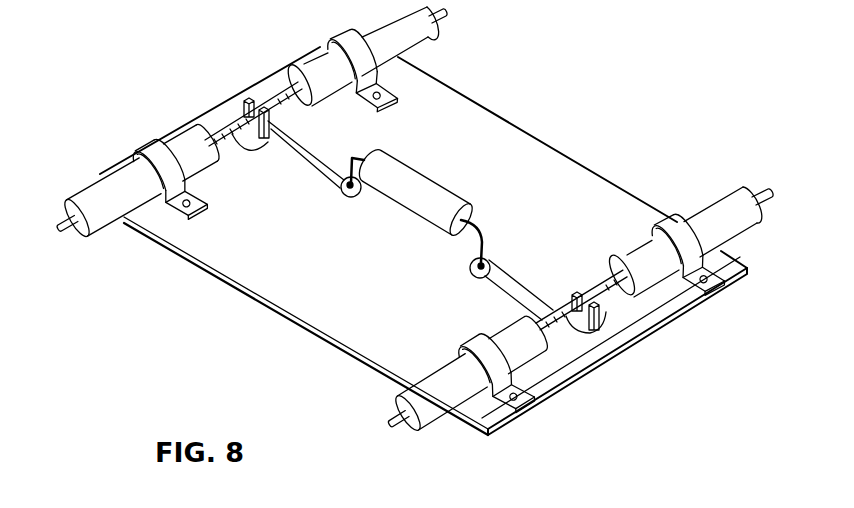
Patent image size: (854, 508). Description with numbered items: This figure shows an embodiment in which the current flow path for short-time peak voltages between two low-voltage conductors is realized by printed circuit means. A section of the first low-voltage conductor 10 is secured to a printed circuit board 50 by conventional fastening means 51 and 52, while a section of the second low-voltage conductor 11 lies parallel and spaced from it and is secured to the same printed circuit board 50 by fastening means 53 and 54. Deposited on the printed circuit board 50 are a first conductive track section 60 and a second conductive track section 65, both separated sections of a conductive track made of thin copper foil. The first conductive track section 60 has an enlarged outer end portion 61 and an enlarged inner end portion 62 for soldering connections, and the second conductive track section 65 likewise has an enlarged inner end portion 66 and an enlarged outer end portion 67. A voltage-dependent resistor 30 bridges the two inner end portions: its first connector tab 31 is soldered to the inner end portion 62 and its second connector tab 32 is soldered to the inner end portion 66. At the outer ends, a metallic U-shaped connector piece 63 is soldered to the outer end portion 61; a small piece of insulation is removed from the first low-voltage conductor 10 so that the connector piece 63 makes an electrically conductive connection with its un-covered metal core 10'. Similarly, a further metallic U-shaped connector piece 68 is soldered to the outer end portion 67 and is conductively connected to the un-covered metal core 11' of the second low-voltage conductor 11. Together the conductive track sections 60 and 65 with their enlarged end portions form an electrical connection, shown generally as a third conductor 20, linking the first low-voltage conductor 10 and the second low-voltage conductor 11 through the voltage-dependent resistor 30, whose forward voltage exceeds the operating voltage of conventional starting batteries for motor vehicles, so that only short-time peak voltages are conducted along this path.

The first low-voltage conductor 10 is at (135, 170).
The un-covered metal core of the first low-voltage conductor 10' is at (326, 76).
The second low-voltage conductor 11 is at (465, 393).
The un-covered metal core of the second low-voltage conductor 11' is at (654, 258).
The third conductor 20 is at (423, 241).
The voltage-dependent resistor 30 is at (423, 180).
The first connector tab 31 is at (348, 162).
The second connector tab 32 is at (477, 227).
The printed circuit board 50 is at (252, 292).
The fastening means 51 is at (167, 213).
The fastening means 52 is at (402, 53).
The fastening means 53 is at (537, 387).
The fastening means 54 is at (713, 282).
The first conductive track section 60 is at (298, 157).
The outer end portion of the first conductive track section 61 is at (280, 123).
The inner end portion of the first conductive track section 62 is at (347, 193).
The U-shaped connector piece 63 is at (245, 107).
The second conductive track section 65 is at (517, 282).
The inner end portion of the second conductive track section 66 is at (470, 265).
The outer end portion of the second conductive track section 67 is at (600, 303).
The U-shaped connector piece 68 is at (598, 327).